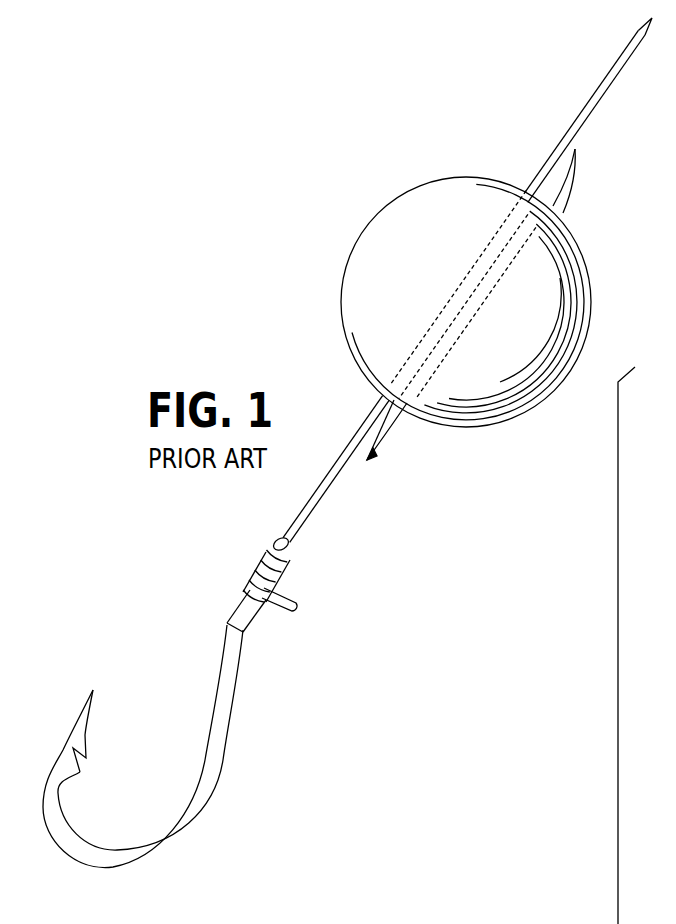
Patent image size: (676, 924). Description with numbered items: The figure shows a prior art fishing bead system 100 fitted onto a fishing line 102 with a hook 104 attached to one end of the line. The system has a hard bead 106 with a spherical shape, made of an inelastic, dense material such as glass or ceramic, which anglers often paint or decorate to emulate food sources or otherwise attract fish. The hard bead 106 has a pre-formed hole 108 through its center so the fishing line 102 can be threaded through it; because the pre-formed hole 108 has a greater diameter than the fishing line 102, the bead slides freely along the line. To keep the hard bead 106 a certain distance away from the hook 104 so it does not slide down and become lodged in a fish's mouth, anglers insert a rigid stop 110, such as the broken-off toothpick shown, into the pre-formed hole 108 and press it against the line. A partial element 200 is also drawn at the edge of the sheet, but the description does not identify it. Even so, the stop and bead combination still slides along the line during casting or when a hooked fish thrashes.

The prior art fishing bead system 100 is at (387, 160).
The fishing line 102 is at (598, 104).
The hook 104 is at (224, 757).
The hard bead 106 is at (342, 306).
The pre-formed hole 108 is at (460, 286).
The rigid stop 110 is at (407, 434).
The fishing rod 200 is at (618, 802).